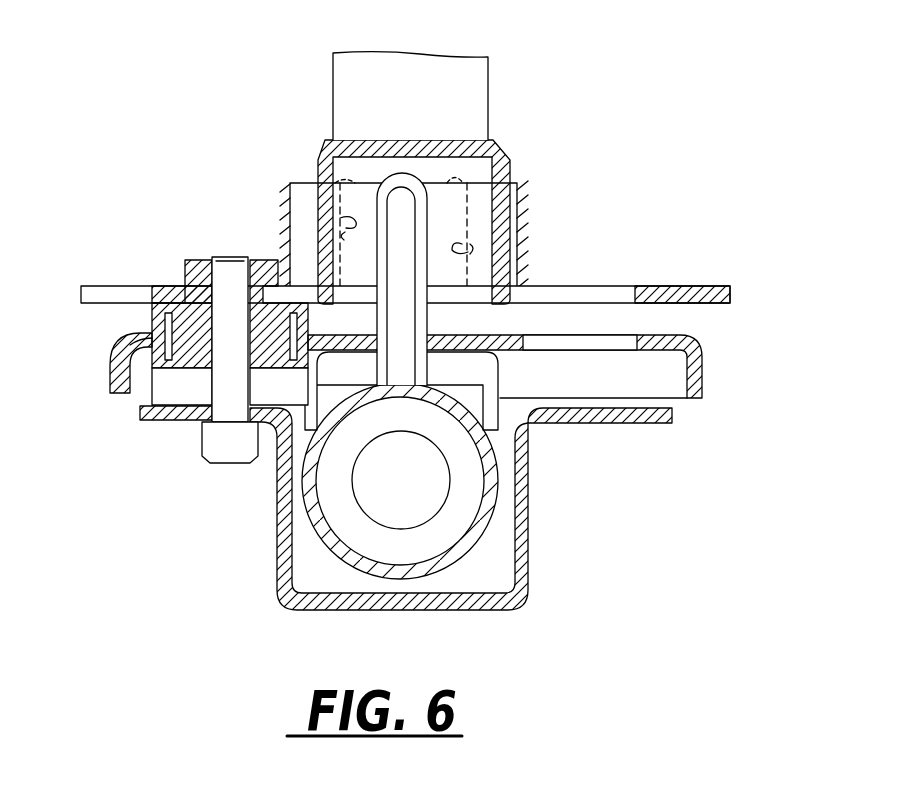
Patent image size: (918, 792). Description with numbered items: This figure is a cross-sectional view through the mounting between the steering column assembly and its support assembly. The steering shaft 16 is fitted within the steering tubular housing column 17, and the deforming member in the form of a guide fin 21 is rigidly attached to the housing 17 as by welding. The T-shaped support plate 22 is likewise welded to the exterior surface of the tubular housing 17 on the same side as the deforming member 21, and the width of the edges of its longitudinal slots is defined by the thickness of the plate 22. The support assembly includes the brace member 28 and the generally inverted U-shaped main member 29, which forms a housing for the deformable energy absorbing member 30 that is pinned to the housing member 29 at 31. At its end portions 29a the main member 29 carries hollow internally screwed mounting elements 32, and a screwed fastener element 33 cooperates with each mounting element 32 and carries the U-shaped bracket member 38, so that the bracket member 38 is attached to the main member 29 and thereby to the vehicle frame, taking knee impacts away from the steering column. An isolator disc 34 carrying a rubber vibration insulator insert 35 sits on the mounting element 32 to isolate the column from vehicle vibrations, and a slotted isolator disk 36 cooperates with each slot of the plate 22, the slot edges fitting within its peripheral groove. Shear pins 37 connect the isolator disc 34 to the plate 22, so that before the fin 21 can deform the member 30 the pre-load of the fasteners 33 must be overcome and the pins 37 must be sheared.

The steering shaft 16 is at (443, 492).
The steering tubular housing column 17 is at (328, 540).
The guide fin 21 is at (403, 177).
The support plate 22 is at (122, 395).
The brace member 28 is at (478, 104).
The main U-shaped member 29 is at (500, 173).
The end portions 29a is at (122, 284).
The deformable member 30 is at (470, 186).
The pin 31 is at (330, 210).
The mounting element 32 is at (200, 258).
The screwed fastener element 33 is at (227, 452).
The isolator disc 34 is at (157, 318).
The rubber vibration insulator insert 35 is at (180, 372).
The slotted isolator disk 36 is at (145, 357).
The shear pins 37 is at (148, 337).
The U-shaped bracket member 38 is at (512, 600).